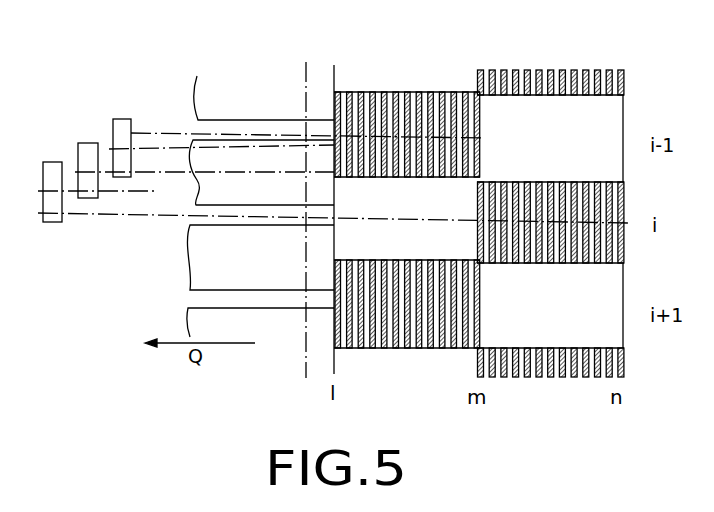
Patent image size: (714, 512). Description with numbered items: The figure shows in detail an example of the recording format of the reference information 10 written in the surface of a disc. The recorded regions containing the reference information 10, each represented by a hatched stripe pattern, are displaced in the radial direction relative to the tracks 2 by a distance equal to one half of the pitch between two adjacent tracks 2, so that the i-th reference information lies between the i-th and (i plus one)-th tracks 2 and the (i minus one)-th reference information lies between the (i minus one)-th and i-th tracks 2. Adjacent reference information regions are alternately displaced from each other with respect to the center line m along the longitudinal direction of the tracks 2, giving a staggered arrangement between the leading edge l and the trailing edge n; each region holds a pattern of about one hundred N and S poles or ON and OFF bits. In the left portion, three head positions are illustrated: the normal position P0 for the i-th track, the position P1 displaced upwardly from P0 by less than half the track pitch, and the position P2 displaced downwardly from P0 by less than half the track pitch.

The reference information 10 is at (455, 71).
The tracks 2 is at (195, 173).
The normal head position P0 is at (80, 143).
The upwardly displaced head position P1 is at (115, 119).
The downwardly displaced head position P2 is at (48, 162).